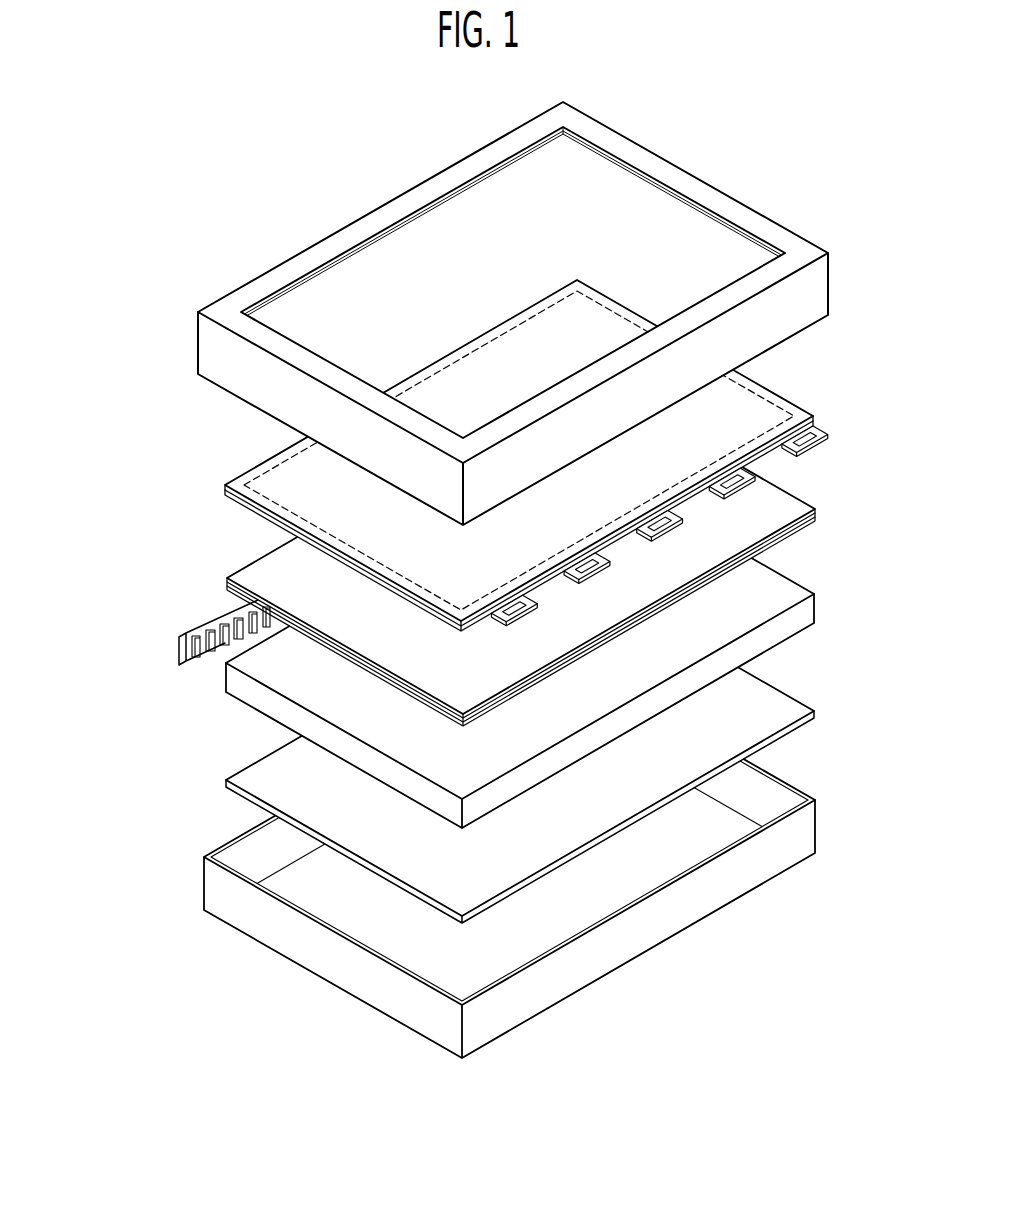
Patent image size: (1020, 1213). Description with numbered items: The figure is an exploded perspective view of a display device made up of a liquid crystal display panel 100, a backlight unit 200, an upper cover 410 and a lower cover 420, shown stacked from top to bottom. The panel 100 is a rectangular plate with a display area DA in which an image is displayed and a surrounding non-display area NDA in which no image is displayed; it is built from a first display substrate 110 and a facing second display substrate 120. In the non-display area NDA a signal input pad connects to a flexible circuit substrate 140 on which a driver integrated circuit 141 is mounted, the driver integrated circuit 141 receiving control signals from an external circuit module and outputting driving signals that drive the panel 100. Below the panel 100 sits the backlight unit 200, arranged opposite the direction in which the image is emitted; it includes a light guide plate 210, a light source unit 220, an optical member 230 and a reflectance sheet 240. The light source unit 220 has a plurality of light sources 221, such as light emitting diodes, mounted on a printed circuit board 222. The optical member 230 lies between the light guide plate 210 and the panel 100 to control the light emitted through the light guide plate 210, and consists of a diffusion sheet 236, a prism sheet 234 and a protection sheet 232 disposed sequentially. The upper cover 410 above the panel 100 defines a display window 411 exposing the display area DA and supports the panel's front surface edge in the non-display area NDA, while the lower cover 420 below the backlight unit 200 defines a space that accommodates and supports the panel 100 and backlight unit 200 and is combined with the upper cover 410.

The liquid crystal display panel 100 is at (480, 455).
The first display substrate 110 is at (222, 495).
The second display substrate 120 is at (462, 453).
The flexible circuit substrate 140 is at (828, 433).
The driver integrated circuit 141 is at (810, 446).
The backlight unit 200 is at (418, 648).
The light guide plate 210 is at (240, 688).
The light source unit 220 is at (167, 643).
The light sources 221 is at (179, 640).
The printed circuit board 222 is at (191, 647).
The optical member 230 is at (440, 549).
The protection sheet 232 is at (226, 578).
The prism sheet 234 is at (226, 583).
The diffusion sheet 236 is at (226, 589).
The reflectance sheet 240 is at (258, 770).
The upper cover 410 is at (468, 313).
The display window 411 is at (446, 262).
The lower cover 420 is at (196, 886).
The display area DA is at (268, 479).
The non-display area NDA is at (280, 450).